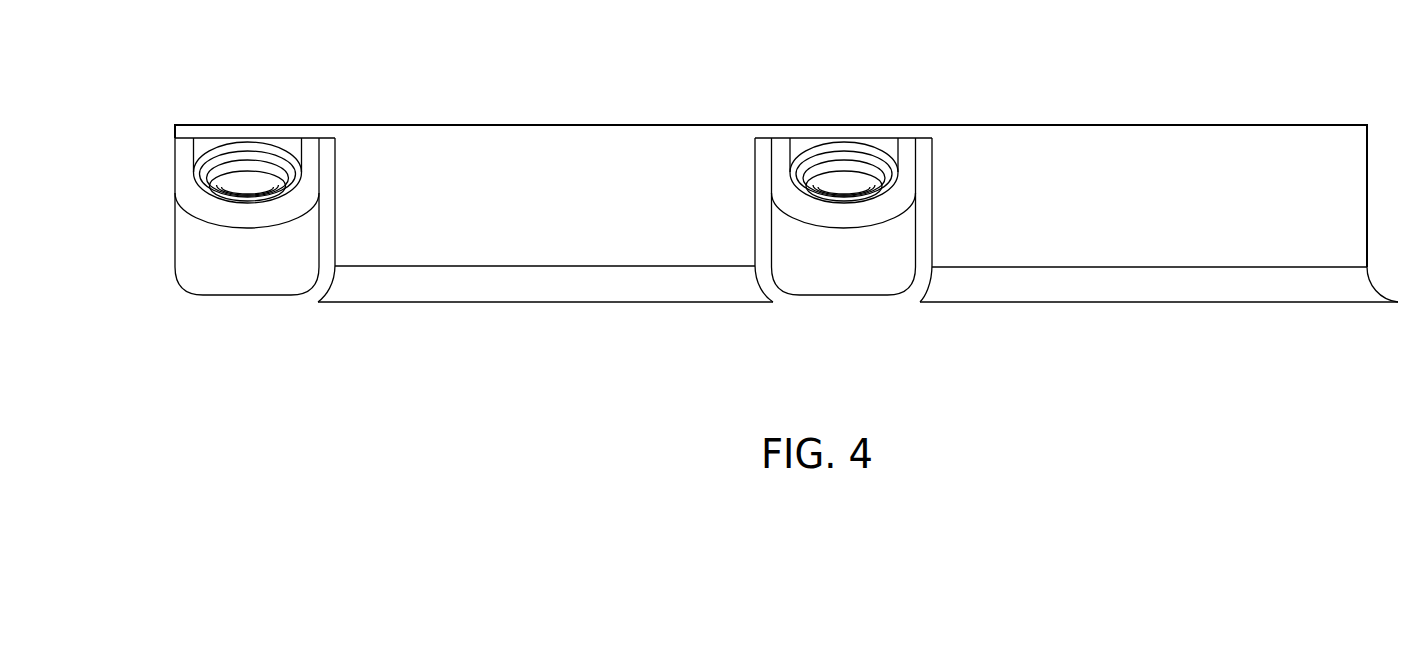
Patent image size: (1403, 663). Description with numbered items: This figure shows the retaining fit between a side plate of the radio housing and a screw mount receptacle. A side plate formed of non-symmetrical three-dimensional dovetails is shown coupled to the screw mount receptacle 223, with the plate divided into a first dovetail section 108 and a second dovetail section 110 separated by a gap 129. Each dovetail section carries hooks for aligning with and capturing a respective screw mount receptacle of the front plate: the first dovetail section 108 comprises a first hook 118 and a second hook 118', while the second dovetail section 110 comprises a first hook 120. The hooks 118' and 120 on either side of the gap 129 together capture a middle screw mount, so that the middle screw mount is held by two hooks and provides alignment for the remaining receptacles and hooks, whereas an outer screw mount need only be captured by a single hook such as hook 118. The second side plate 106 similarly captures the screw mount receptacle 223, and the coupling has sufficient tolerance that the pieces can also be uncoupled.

The second side plate 106 is at (1066, 106).
The first dovetail section 108 is at (526, 267).
The second dovetail section 110 is at (1163, 270).
The first hook 118 is at (336, 308).
The second hook 118' is at (765, 308).
The first hook 120 is at (923, 292).
The gap 129 is at (925, 165).
The screw mount receptacle 223 is at (838, 277).